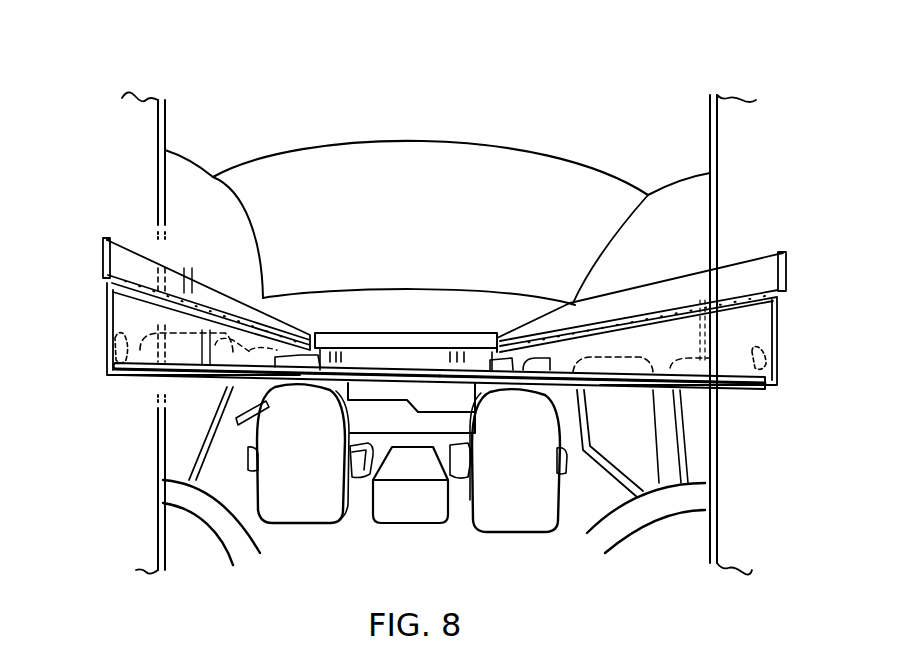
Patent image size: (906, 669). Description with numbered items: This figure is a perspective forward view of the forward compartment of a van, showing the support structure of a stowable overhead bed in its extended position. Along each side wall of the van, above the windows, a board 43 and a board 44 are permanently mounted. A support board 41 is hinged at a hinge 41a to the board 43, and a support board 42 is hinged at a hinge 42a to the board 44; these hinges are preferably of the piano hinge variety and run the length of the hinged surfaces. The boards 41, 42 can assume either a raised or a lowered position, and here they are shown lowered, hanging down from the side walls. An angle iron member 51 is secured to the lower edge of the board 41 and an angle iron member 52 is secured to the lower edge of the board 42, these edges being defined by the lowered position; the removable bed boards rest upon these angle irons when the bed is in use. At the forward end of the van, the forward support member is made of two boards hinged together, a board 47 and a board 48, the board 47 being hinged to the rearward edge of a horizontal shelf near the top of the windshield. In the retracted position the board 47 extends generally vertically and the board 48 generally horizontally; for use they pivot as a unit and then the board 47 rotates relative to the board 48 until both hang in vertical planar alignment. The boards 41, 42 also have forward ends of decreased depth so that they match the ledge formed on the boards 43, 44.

The board 41 is at (108, 308).
The hinge 41a is at (107, 257).
The board 42 is at (778, 350).
The hinge 42a is at (728, 297).
The board 43 is at (123, 257).
The board 44 is at (763, 272).
The board 47 is at (382, 342).
The board 48 is at (436, 356).
The angle iron member 51 is at (115, 378).
The angle iron member 52 is at (758, 390).